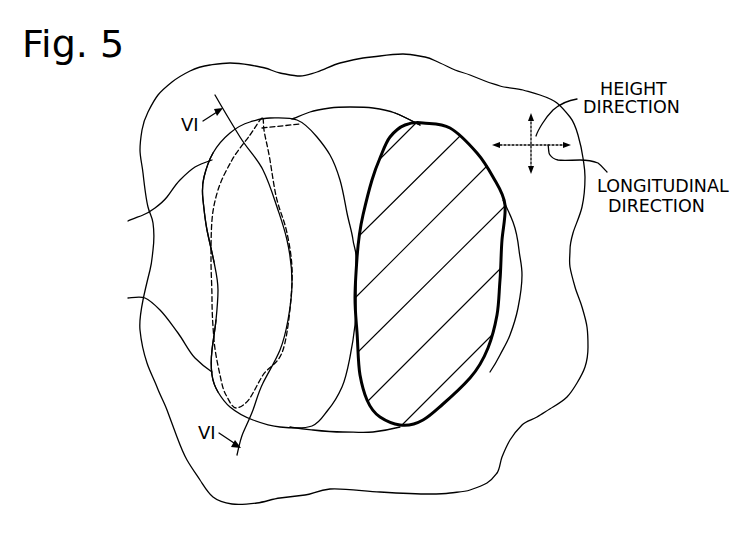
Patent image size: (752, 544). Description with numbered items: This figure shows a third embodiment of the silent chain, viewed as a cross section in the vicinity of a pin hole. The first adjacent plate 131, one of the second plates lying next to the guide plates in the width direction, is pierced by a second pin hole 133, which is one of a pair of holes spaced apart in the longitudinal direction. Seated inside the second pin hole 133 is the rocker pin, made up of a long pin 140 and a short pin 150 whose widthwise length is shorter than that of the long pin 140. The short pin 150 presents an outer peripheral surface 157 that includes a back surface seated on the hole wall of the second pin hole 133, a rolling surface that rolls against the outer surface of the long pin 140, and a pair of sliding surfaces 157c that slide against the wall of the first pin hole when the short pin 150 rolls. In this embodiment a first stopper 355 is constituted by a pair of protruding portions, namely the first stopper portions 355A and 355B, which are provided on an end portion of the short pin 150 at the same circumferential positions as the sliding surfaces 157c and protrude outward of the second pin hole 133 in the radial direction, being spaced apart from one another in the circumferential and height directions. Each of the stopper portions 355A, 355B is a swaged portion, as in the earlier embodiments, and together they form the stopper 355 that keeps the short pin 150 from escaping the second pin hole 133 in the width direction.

The first adjacent plate 131 is at (525, 387).
The second pin hole 133 is at (397, 112).
The long pin 140 is at (438, 180).
The short pin 150 is at (330, 129).
The outer peripheral surface 157 is at (345, 396).
The sliding surface 157c is at (262, 118).
The first stopper 355 is at (79, 211).
The first stopper portion 355A is at (150, 341).
The first stopper portion 355B is at (148, 207).